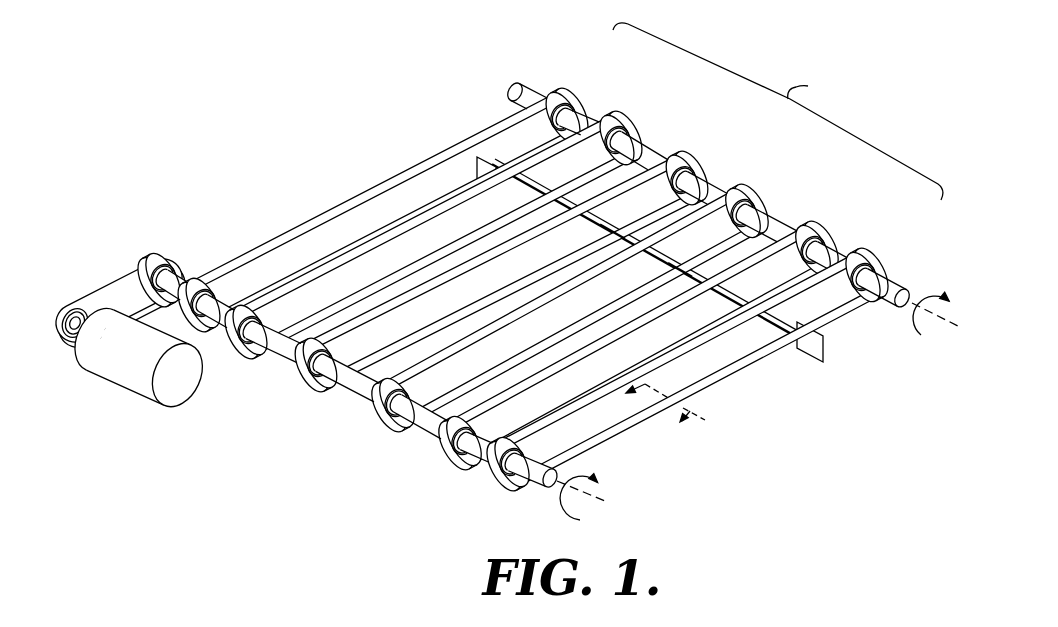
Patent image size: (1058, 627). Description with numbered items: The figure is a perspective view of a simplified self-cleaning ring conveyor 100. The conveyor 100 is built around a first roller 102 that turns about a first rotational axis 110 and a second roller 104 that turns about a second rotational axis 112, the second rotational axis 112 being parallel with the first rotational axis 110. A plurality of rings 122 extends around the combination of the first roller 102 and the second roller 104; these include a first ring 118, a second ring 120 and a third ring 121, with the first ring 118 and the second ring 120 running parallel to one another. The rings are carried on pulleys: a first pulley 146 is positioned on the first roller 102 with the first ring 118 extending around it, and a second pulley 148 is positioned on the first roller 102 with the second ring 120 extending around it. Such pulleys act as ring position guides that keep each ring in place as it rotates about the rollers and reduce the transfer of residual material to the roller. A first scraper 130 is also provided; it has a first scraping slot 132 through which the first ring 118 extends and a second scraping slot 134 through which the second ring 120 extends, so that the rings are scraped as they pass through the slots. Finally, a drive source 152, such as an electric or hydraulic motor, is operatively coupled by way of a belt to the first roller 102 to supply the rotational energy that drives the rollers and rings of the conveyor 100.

The self-cleaning ring conveyor 100 is at (503, 280).
The first roller 102 is at (532, 486).
The second roller 104 is at (881, 300).
The first rotational axis 110 is at (604, 513).
The second rotational axis 112 is at (953, 328).
The first ring 118 is at (312, 318).
The second ring 120 is at (352, 368).
The third ring 121 is at (627, 423).
The plurality of rings 122 is at (778, 111).
The first scraper 130 is at (810, 354).
The first scraping slot 132 is at (613, 227).
The second scraping slot 134 is at (680, 268).
The first pulley 146 is at (328, 393).
The second pulley 148 is at (389, 421).
The drive source 152 is at (122, 378).